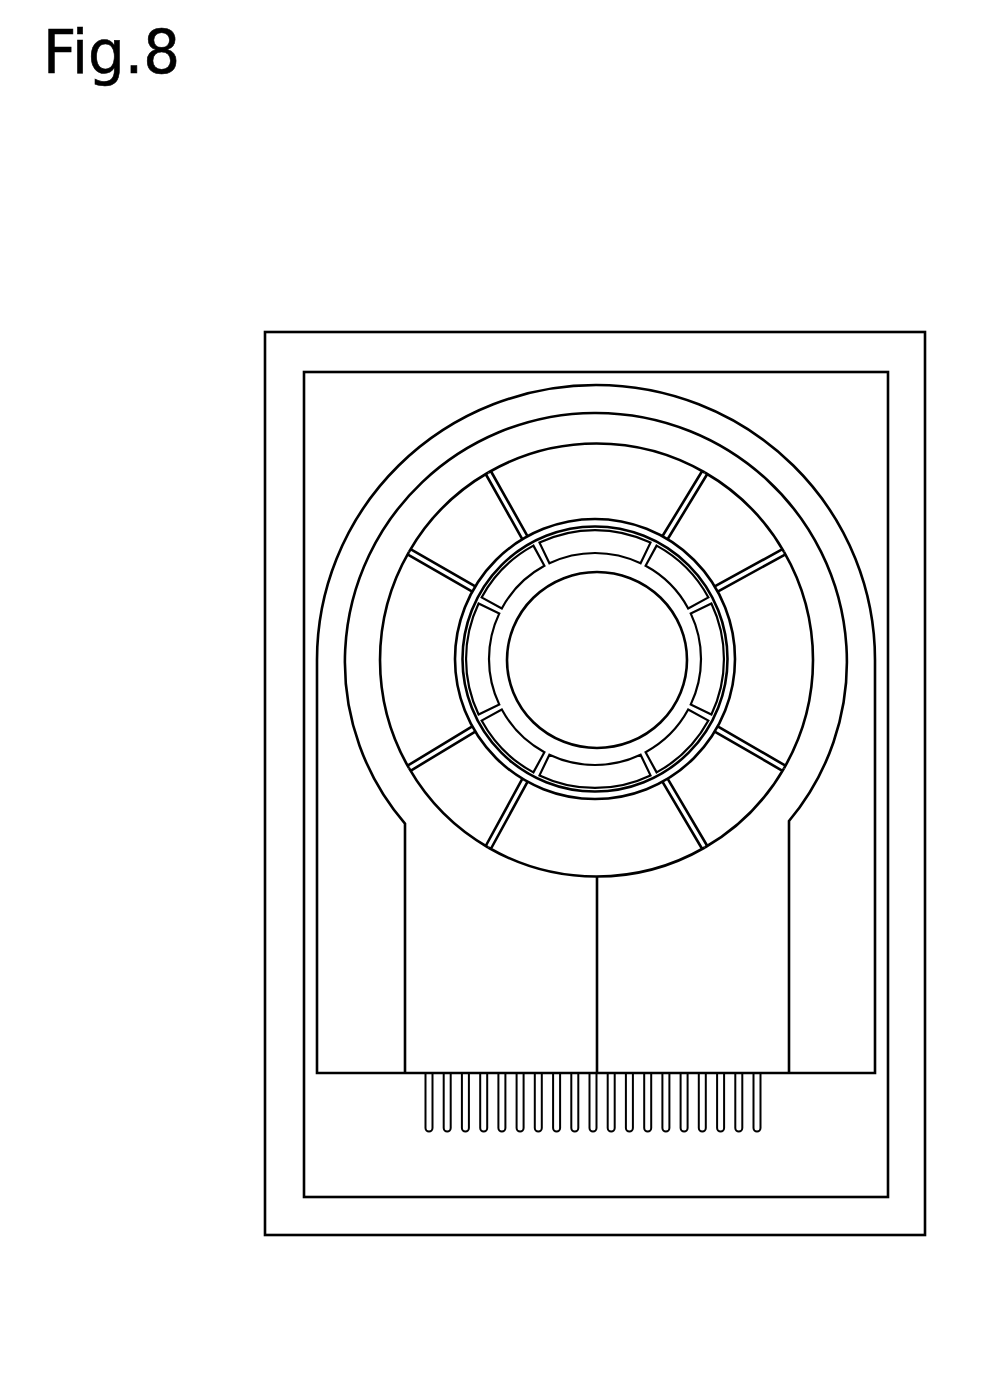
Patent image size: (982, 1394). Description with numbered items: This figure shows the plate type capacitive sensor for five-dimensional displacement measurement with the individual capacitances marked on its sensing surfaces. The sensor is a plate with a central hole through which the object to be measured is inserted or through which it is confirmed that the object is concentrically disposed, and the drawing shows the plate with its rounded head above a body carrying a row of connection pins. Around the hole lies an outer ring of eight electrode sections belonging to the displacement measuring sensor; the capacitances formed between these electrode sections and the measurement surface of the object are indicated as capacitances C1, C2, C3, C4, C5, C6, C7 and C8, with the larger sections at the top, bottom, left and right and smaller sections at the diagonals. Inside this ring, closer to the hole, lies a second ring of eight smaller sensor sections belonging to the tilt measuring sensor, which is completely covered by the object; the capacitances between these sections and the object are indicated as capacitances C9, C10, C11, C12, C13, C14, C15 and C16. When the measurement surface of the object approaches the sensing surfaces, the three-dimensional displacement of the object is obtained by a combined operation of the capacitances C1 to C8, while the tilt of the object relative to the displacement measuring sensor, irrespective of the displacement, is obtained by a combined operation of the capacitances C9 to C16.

The capacitance C1 is at (596, 489).
The capacitance C2 is at (465, 530).
The capacitance C3 is at (426, 660).
The capacitance C4 is at (465, 790).
The capacitance C5 is at (596, 829).
The capacitance C6 is at (726, 790).
The capacitance C7 is at (765, 660).
The capacitance C8 is at (726, 530).
The capacitance C9 is at (595, 544).
The capacitance C10 is at (513, 577).
The capacitance C11 is at (487, 659).
The capacitance C12 is at (513, 741).
The capacitance C13 is at (595, 772).
The capacitance C14 is at (677, 741).
The capacitance C15 is at (711, 659).
The capacitance C16 is at (677, 577).